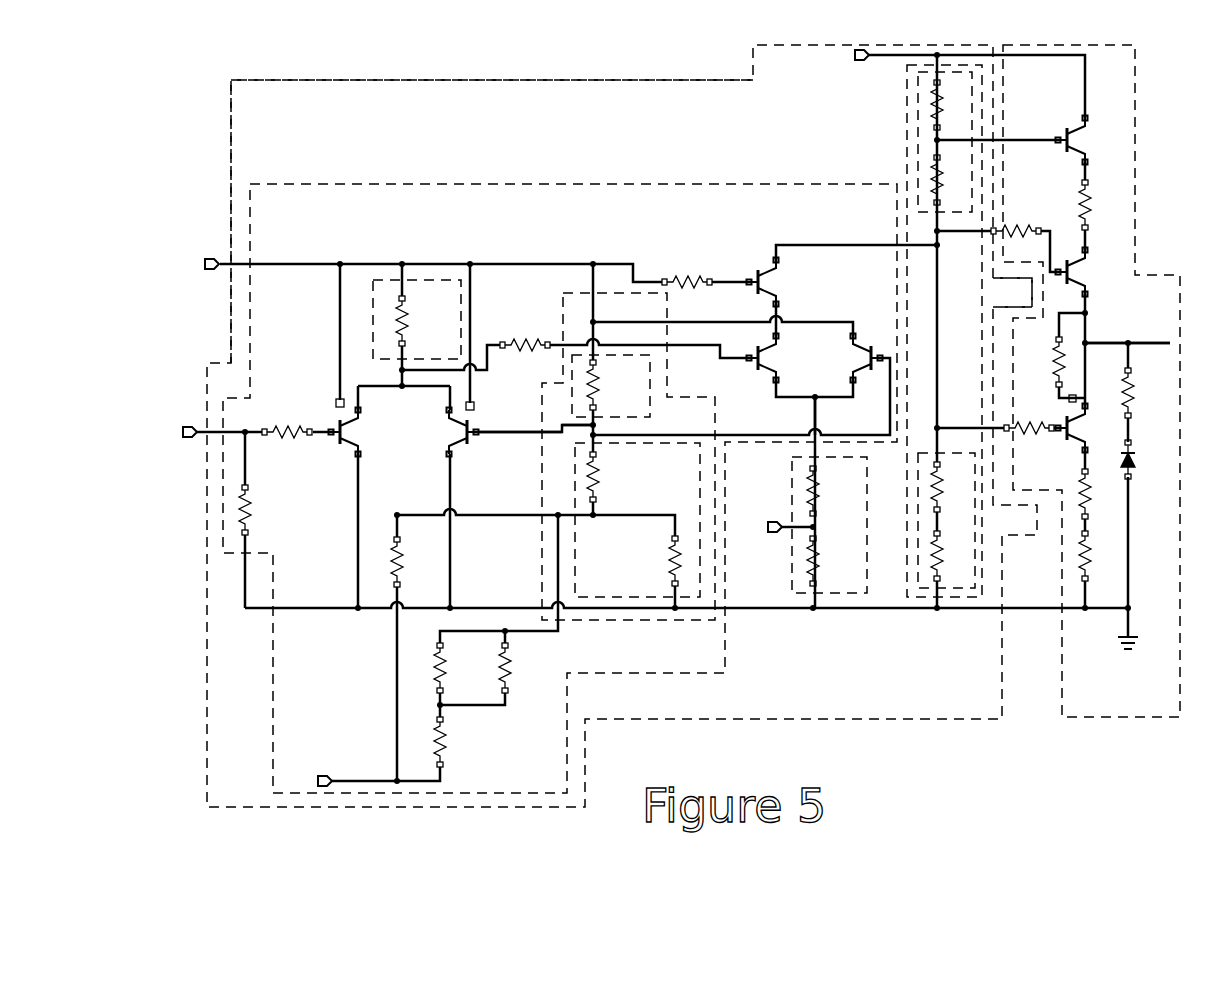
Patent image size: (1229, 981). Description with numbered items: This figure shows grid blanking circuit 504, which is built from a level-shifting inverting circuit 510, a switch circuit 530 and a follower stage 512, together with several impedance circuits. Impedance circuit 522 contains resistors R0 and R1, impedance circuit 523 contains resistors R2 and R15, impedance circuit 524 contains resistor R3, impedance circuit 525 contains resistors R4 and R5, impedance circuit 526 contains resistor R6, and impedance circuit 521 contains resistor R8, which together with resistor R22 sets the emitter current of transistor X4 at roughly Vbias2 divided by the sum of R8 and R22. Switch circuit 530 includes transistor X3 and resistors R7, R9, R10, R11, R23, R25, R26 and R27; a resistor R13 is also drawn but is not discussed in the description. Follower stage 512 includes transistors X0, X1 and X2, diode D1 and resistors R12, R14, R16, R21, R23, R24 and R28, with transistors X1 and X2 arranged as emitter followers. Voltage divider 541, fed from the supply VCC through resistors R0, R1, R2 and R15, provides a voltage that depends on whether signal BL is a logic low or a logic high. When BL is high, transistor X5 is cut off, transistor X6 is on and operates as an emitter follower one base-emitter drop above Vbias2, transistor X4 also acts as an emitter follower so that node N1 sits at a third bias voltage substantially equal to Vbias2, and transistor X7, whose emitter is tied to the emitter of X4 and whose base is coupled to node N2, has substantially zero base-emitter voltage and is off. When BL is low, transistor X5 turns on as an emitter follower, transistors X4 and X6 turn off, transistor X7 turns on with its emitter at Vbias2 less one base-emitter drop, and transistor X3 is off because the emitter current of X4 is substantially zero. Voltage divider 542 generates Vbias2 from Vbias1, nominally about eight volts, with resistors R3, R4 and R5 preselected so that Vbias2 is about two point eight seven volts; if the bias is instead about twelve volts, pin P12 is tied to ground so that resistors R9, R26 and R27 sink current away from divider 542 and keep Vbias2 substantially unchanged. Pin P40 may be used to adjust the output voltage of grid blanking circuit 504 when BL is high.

The grid blanking circuit 504 is at (622, 426).
The level-shifting inverting circuit 510 is at (348, 80).
The follower stage 512 is at (1135, 115).
The impedance circuit 521 is at (829, 525).
The impedance circuit 522 is at (918, 118).
The impedance circuit 523 is at (980, 521).
The impedance circuit 524 is at (611, 386).
The impedance circuit 525 is at (637, 520).
The impedance circuit 526 is at (417, 319).
The switch circuit 530 is at (560, 488).
The voltage divider 541 is at (983, 290).
The voltage divider 542 is at (628, 456).
The resistor R0 is at (948, 105).
The resistor R1 is at (948, 180).
The resistor R2 is at (948, 487).
The resistor R3 is at (605, 385).
The resistor R4 is at (605, 477).
The resistor R5 is at (662, 561).
The resistor R6 is at (413, 321).
The resistor R7 is at (256, 510).
The resistor R8 is at (824, 491).
The resistor R9 is at (451, 742).
The resistor R10 is at (287, 422).
The resistor R11 is at (525, 335).
The resistor R12 is at (1101, 205).
The resistor R13 is at (687, 273).
The resistor R14 is at (1101, 494).
The resistor R15 is at (953, 556).
The resistor R16 is at (1041, 362).
The resistor R21 is at (1101, 556).
The resistor R22 is at (829, 561).
The resistor R23 is at (1016, 221).
The resistor R24 is at (1029, 419).
The resistor R25 is at (414, 562).
The resistor R26 is at (521, 668).
The resistor R27 is at (456, 668).
The resistor R28 is at (1144, 393).
The diode D1 is at (1139, 459).
The transistor X0 is at (1084, 140).
The transistor X1 is at (1084, 272).
The transistor X2 is at (1084, 428).
The transistor X3 is at (775, 282).
The transistor X4 is at (772, 358).
The transistor X5 is at (355, 432).
The transistor X6 is at (453, 432).
The transistor X7 is at (855, 358).
The node N1 is at (815, 400).
The node N2 is at (593, 425).
The supply voltage VCC is at (842, 56).
The signal BL is at (176, 433).
The first bias voltage Vbias1 is at (185, 265).
The second bias voltage Vbias2 is at (520, 420).
The pin p40 P40 is at (760, 528).
The pin p12 P12 is at (309, 782).